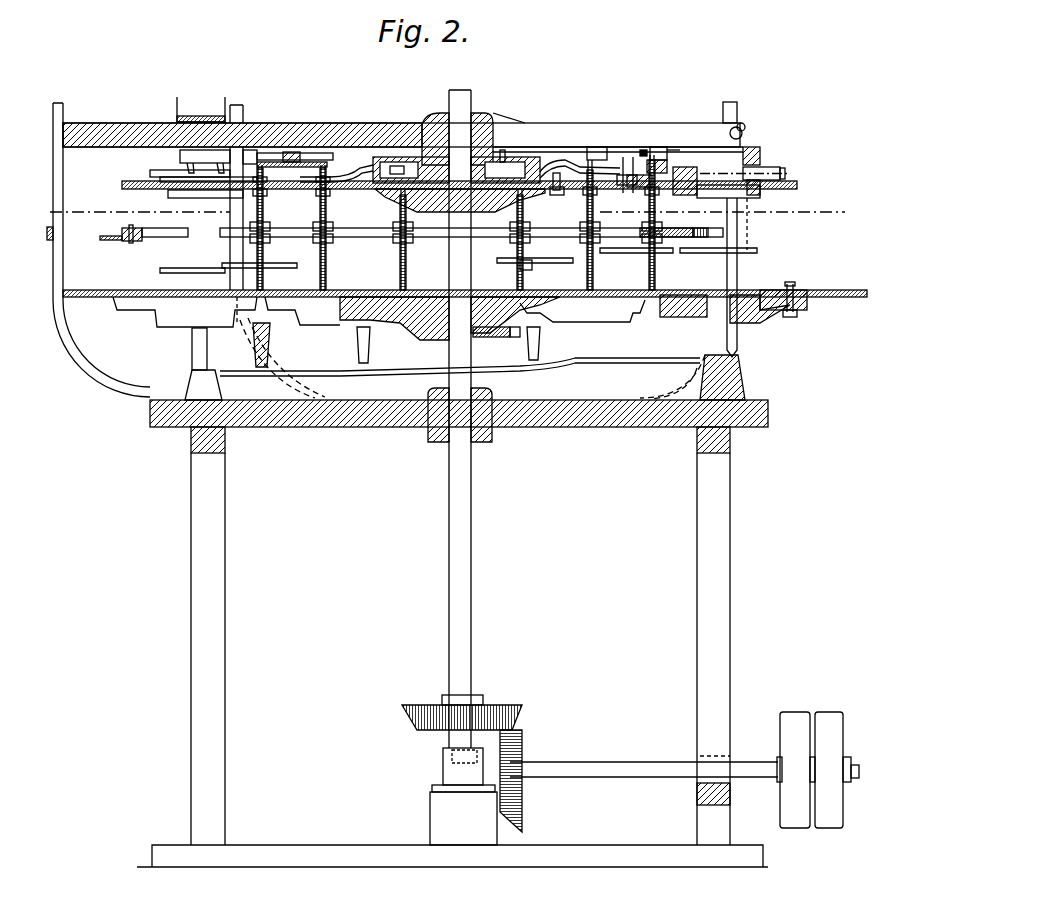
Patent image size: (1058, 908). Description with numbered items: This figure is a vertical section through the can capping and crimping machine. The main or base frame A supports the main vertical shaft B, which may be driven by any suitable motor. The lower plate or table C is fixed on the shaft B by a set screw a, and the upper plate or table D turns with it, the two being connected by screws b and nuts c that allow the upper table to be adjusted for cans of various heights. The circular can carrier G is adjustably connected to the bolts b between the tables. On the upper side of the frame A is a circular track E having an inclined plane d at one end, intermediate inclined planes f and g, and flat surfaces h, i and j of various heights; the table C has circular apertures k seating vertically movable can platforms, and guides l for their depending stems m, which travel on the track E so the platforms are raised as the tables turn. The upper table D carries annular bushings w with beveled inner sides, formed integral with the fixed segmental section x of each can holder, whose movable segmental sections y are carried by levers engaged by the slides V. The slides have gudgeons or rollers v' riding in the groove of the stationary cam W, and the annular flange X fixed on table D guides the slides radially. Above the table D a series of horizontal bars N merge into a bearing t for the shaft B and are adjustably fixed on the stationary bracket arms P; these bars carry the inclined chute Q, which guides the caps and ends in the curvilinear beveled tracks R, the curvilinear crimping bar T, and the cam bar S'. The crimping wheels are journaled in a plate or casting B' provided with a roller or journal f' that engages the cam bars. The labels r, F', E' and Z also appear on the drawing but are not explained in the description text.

The inclined chute Q is at (213, 120).
The plate or casting B' is at (280, 126).
The horizontal bars N is at (322, 160).
The slides V is at (350, 157).
The stationary cam W is at (437, 157).
The bearing t is at (483, 130).
The gudgeons or rollers v' is at (517, 145).
The cam bar S' is at (652, 121).
The roller or journal f' is at (479, 133).
The stationary bracket arms P is at (737, 115).
The curvilinear crimping bar T is at (762, 152).
The movable segmental sections y is at (767, 168).
The parallel, curvilinear and beveled tracks R is at (173, 155).
The circular can carrier G is at (362, 232).
The annular flange X is at (553, 183).
The fixed segmental section x is at (669, 214).
The annular bushings w is at (696, 214).
The upper plate or table D is at (773, 195).
The lever r is at (165, 238).
The plate F' is at (458, 259).
The nuts c is at (587, 242).
The bar E' is at (480, 242).
The screws b is at (408, 275).
The circular apertures k is at (783, 283).
The trough Z is at (226, 311).
The lower plate or table C is at (860, 300).
The guides l is at (757, 320).
The flat surface h is at (220, 370).
The intermediate inclined plane f is at (282, 358).
The flat surface i is at (383, 365).
The set screw a is at (510, 332).
The intermediate inclined plane g is at (570, 360).
The depending stems m is at (723, 352).
The circular or curvilinear track E is at (460, 374).
The flat surface j is at (662, 357).
The inclined plane d is at (203, 385).
The main vertical shaft B is at (477, 419).
The main or base frame A is at (700, 490).